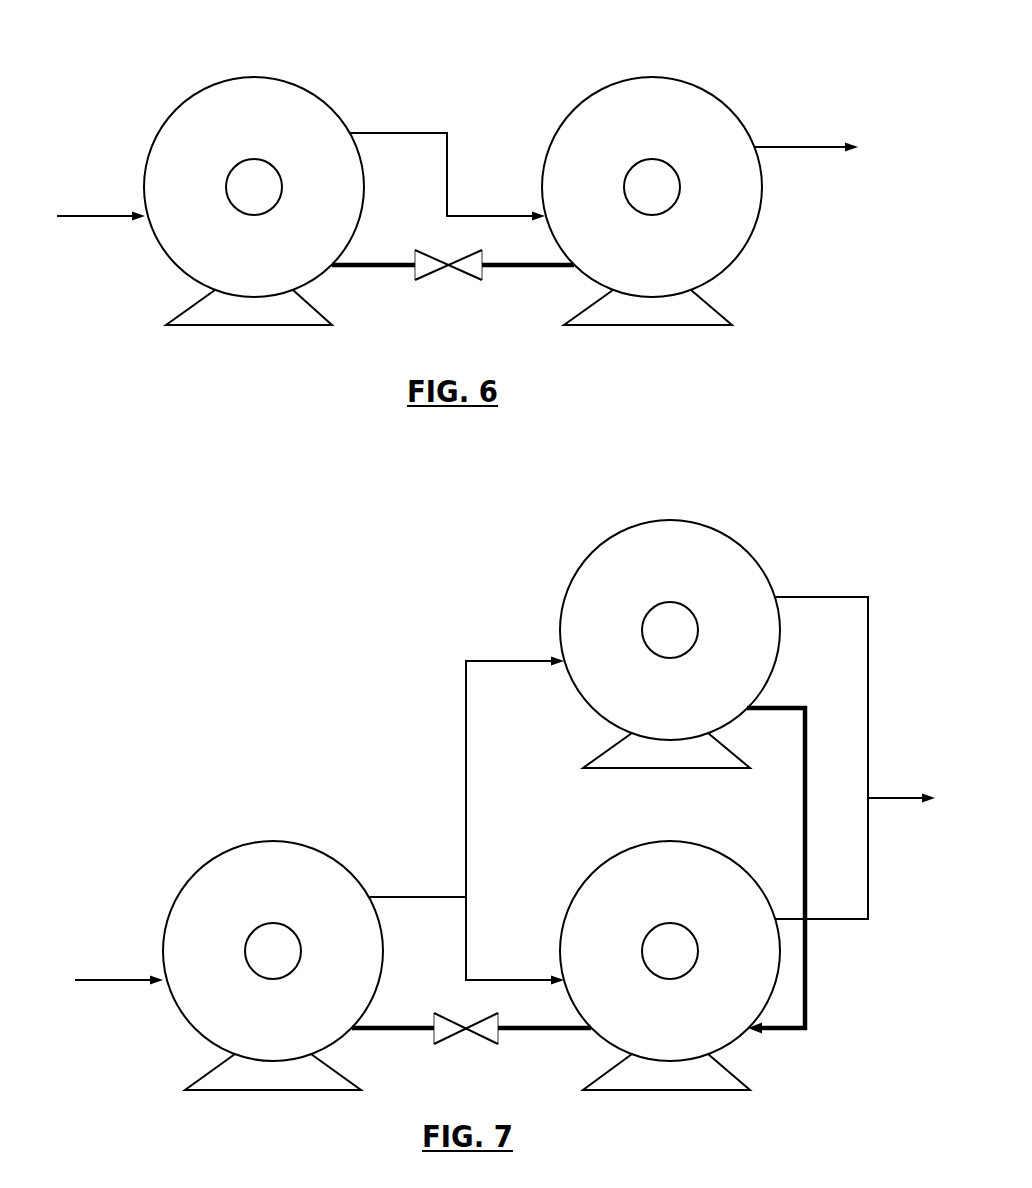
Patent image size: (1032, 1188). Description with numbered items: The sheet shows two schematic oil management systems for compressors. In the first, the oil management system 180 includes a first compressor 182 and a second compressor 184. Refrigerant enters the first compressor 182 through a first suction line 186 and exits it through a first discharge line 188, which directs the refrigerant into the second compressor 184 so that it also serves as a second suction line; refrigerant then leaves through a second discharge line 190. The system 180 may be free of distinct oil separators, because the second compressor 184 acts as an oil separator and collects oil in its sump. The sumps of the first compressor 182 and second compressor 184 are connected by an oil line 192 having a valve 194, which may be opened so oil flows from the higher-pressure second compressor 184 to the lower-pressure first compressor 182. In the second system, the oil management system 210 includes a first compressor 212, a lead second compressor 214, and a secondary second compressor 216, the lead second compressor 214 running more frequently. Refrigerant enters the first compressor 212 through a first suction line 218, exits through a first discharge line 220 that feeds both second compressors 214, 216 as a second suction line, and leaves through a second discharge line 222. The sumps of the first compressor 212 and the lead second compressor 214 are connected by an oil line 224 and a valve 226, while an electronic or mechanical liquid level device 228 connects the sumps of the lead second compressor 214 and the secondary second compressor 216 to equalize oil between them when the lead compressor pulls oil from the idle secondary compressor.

In FIG. 6, the oil management system 180 is at (176, 52).
In FIG. 6, the first compressor 182 is at (331, 108).
In FIG. 6, the second compressor 184 is at (725, 105).
In FIG. 6, the first suction line 186 is at (82, 216).
In FIG. 6, the first discharge line 188 is at (437, 133).
In FIG. 6, the second discharge line 190 is at (782, 148).
In FIG. 6, the oil line 192 is at (358, 267).
In FIG. 6, the valve 194 is at (482, 281).
In FIG. 7, the oil management system 210 is at (184, 806).
In FIG. 7, the first compressor 212 is at (341, 864).
In FIG. 7, the lead second compressor 214 is at (732, 860).
In FIG. 7, the secondary second compressor 216 is at (762, 569).
In FIG. 7, the first suction line 218 is at (100, 980).
In FIG. 7, the first discharge line 220 is at (397, 898).
In FIG. 7, the second discharge line 222 is at (880, 798).
In FIG. 7, the oil line 224 is at (365, 1030).
In FIG. 7, the valve 226 is at (498, 1045).
In FIG. 7, the liquid level device 228 is at (808, 993).